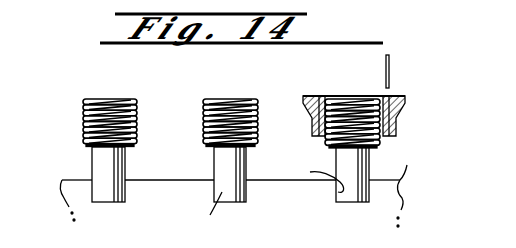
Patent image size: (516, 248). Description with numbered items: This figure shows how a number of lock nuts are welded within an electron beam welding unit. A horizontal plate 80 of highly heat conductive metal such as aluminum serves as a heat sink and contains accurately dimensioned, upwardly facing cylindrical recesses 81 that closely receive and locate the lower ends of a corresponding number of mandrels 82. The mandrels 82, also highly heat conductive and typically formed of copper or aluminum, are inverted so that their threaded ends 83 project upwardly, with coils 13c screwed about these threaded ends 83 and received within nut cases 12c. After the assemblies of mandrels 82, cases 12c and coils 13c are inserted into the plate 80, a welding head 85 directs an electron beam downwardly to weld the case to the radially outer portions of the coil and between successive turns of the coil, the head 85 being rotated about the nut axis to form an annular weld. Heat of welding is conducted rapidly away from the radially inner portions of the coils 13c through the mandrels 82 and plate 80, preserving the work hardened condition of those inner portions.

The horizontal plate 80 is at (397, 183).
The recesses 81 is at (236, 190).
The mandrels 82 is at (110, 190).
The threaded ends 83 is at (110, 99).
The welding head 85 is at (392, 68).
The nut cases 12c is at (405, 125).
The coils 13c is at (403, 112).